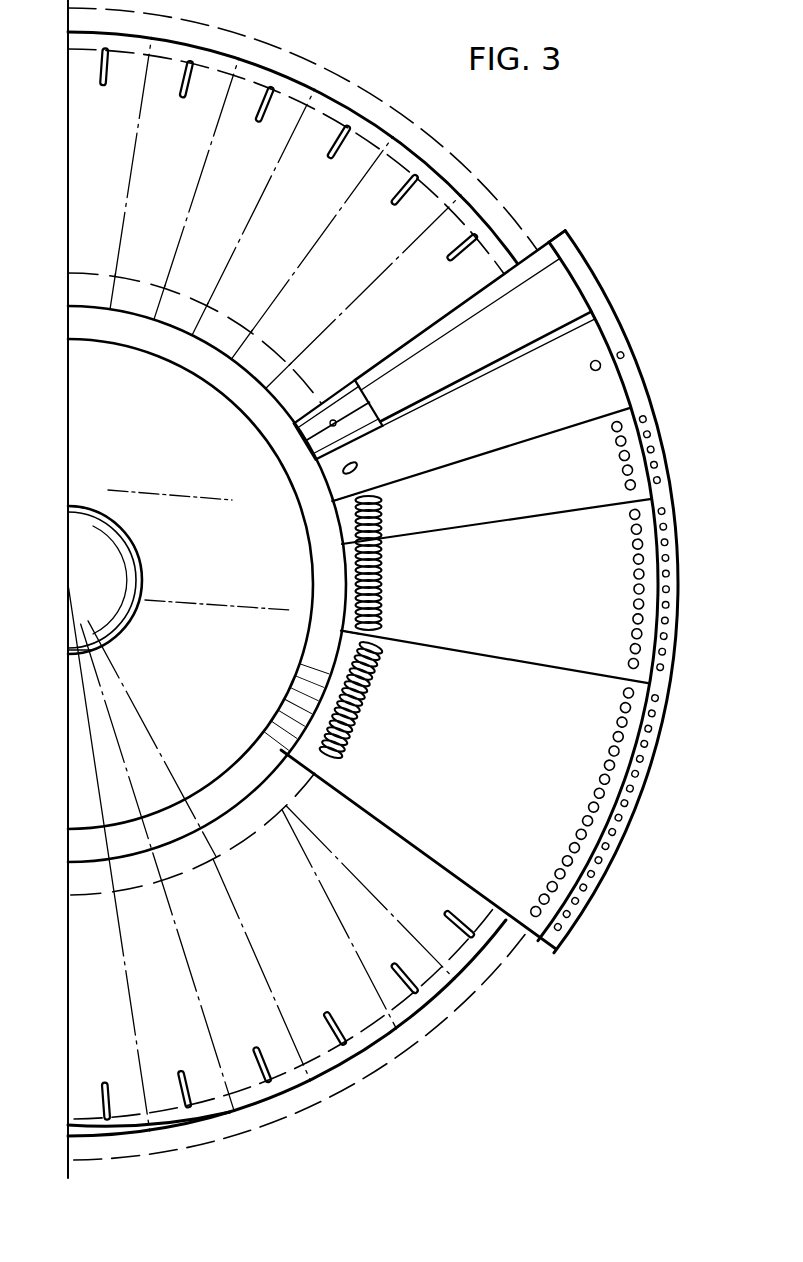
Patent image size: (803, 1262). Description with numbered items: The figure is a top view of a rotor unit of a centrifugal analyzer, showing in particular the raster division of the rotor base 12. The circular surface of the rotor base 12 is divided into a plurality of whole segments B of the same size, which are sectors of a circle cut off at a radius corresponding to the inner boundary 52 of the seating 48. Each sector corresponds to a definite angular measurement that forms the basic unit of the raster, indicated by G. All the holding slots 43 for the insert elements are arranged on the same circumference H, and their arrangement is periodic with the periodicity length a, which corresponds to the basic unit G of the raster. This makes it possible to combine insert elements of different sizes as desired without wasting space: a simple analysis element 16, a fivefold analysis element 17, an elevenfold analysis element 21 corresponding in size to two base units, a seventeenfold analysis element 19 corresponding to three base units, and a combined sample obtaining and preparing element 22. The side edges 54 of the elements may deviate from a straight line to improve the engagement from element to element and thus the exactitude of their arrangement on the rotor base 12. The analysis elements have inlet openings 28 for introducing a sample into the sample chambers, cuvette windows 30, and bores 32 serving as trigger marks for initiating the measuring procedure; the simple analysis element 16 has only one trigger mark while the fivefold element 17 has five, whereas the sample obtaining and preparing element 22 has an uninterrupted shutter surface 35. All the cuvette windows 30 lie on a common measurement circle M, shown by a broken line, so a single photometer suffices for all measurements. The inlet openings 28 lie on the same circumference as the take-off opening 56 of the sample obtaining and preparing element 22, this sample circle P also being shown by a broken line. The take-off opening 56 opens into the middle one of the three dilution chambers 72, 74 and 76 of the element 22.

The rotor base 12 is at (283, 114).
The holding slots 43 is at (460, 238).
The uninterrupted shutter surface 35 is at (594, 292).
The combined sample obtaining and preparing element 22 is at (500, 350).
The simple analysis element 16 is at (506, 423).
The fivefold analysis element 17 is at (547, 500).
The elevenfold analysis element 21 is at (534, 615).
The seventeenfold analysis element 19 is at (507, 737).
The take-off opening 56 is at (334, 420).
The seating 48 is at (216, 386).
The inner boundary 52 is at (188, 792).
The dilution chamber 72 is at (298, 438).
The dilution chamber 74 is at (298, 462).
The dilution chamber 76 is at (306, 487).
The side edges 54 is at (408, 533).
The inlet openings 28 is at (386, 582).
The cuvette windows 30 is at (639, 574).
The bores 32 is at (665, 520).
The basic unit of the raster G is at (104, 766).
The sample circle P is at (181, 591).
The circumference of holding slots H is at (273, 590).
The measurement circle M is at (289, 591).
The whole segments B is at (208, 1108).
The periodicity length a is at (344, 1019).